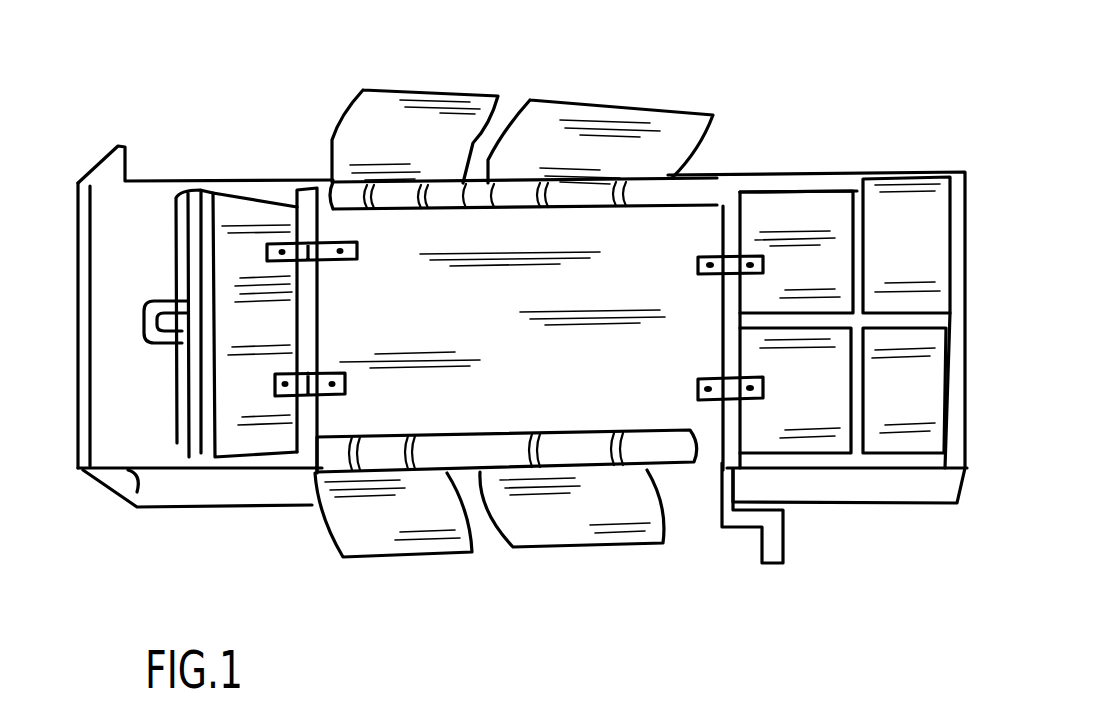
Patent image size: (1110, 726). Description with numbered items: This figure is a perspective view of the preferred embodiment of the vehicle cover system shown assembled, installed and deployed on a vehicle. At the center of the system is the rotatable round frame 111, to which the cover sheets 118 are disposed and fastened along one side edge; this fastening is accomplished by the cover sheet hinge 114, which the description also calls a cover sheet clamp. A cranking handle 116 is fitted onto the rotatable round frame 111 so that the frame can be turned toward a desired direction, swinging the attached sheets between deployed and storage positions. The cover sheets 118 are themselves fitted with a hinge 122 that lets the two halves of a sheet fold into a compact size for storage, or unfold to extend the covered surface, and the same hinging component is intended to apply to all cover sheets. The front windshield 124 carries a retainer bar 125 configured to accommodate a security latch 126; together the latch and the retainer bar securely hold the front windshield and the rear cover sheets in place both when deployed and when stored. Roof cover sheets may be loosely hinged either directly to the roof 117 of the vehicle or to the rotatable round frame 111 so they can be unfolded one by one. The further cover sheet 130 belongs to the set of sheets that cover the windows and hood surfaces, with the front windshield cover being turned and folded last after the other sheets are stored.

The rotatable round frame 111 is at (730, 215).
The cover sheet hinge 114 is at (755, 408).
The cranking handle 116 is at (778, 572).
The roof 117 is at (445, 392).
The cover sheets 118 is at (555, 520).
The hinge 122 is at (393, 143).
The front windshield 124 is at (250, 212).
The retainer bar 125 is at (177, 198).
The security latch 126 is at (150, 362).
The cover sheet 130 is at (810, 218).